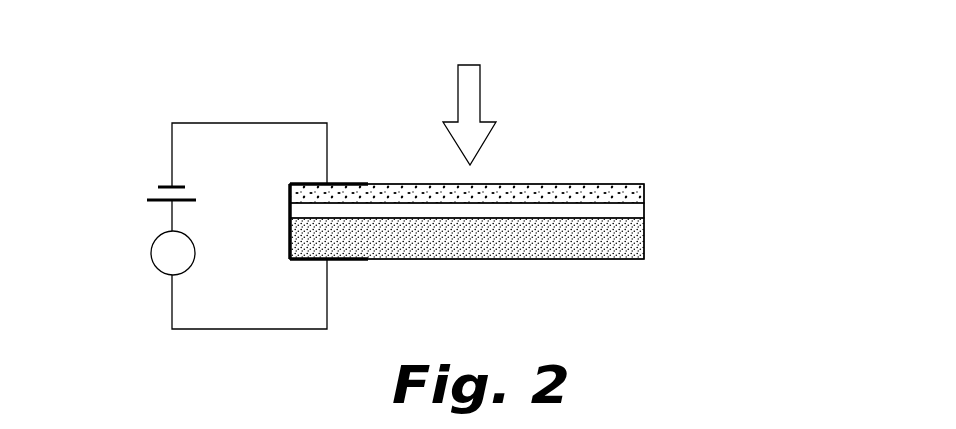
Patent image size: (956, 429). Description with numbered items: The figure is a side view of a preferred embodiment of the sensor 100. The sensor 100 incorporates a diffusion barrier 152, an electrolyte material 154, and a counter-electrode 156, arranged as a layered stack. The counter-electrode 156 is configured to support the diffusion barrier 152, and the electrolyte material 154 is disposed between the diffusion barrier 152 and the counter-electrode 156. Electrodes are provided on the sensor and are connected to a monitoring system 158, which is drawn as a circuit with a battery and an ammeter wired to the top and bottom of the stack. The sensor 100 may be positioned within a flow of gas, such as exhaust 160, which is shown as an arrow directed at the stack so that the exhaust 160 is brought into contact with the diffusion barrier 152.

The sensor 100 is at (697, 313).
The diffusion barrier 152 is at (632, 193).
The electrolyte material 154 is at (637, 212).
The counter-electrode 156 is at (633, 233).
The monitoring system 158 is at (152, 248).
The exhaust 160 is at (493, 97).